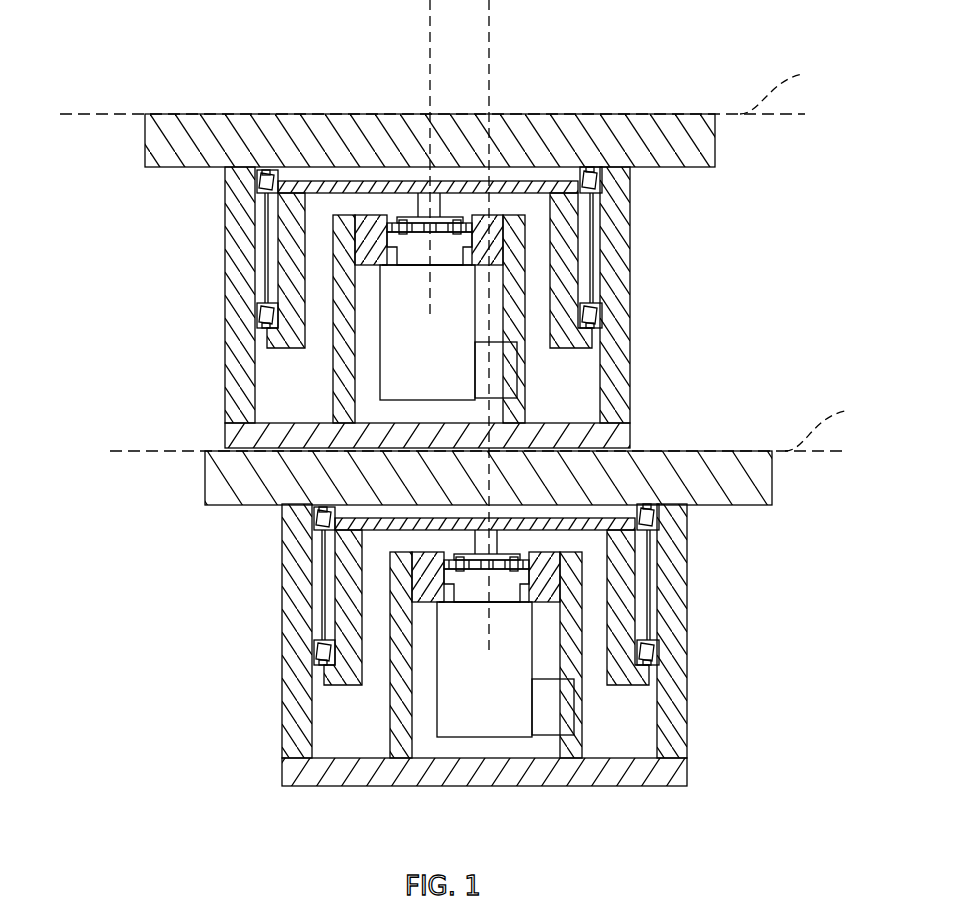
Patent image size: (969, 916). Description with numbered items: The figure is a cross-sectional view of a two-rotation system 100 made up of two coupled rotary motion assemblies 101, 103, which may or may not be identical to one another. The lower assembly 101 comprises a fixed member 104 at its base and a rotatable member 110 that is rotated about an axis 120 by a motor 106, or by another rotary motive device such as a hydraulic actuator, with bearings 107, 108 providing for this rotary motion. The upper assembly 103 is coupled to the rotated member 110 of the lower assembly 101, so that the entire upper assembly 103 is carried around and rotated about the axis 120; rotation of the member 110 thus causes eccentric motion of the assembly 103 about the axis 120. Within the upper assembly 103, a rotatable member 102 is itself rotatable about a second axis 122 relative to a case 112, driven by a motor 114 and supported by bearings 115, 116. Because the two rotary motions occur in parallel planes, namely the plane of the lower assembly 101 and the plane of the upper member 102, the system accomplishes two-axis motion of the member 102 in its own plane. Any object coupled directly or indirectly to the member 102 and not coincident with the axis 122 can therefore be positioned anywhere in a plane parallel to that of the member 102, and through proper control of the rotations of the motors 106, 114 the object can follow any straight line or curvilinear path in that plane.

The system 100 is at (96, 627).
The rotary motion assembly 101 is at (265, 588).
The rotatable member 102 is at (400, 114).
The rotary motion assembly 103 is at (208, 249).
The fixed member 104 is at (533, 765).
The motor 106 is at (453, 644).
The bearing 107 is at (546, 640).
The bearing 108 is at (546, 531).
The rotatable member 110 is at (772, 483).
The case 112 is at (630, 400).
The motor 114 is at (390, 360).
The bearing 115 is at (602, 314).
The bearing 116 is at (602, 183).
The axis 120 is at (493, 42).
The axis 122 is at (428, 48).